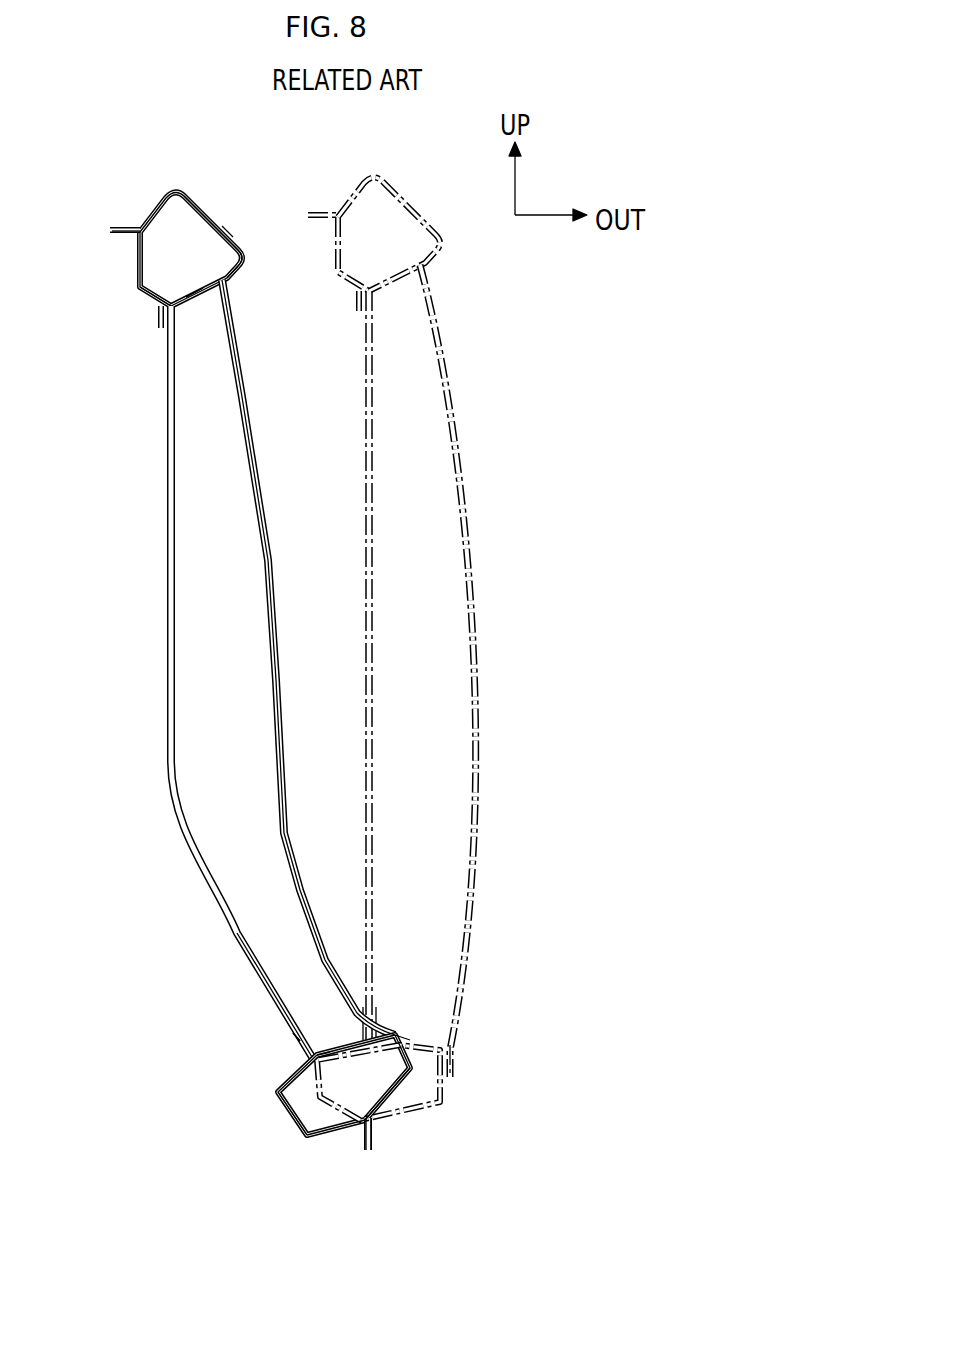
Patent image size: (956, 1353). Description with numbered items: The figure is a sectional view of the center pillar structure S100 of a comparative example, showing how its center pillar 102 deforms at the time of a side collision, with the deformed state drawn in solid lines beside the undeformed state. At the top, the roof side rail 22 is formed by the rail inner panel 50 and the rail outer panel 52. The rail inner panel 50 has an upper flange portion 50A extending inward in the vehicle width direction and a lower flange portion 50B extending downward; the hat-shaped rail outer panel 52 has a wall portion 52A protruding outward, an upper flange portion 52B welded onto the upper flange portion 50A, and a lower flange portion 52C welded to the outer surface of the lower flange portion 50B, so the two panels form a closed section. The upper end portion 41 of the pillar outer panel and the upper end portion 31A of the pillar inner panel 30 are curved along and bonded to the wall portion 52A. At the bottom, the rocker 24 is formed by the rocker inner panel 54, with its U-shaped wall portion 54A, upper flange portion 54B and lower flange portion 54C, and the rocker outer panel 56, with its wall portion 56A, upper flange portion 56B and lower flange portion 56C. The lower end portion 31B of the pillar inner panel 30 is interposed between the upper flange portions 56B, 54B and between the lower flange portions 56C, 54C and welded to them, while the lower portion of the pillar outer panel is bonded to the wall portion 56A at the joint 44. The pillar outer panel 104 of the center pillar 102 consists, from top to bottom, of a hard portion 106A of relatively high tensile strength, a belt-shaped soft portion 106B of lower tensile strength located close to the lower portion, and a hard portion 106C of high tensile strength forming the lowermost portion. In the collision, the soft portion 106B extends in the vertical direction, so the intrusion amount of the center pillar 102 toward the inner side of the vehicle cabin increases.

The roof side rail 22 is at (198, 194).
The rocker 24 is at (282, 1114).
The pillar inner panel 30 is at (165, 656).
The upper end portion 31A is at (188, 305).
The lower end portion 31B is at (281, 1017).
The upper end portion 41 is at (241, 258).
The joint 44 is at (403, 1035).
The roof side rail inner panel 50 is at (137, 275).
The upper flange portion 50A is at (120, 237).
The lower flange portion 50B is at (156, 314).
The roof side rail outer panel 52 is at (219, 218).
The wall portion 52A is at (207, 209).
The upper flange portion 52B is at (128, 226).
The lower flange portion 52C is at (162, 330).
The rocker inner panel 54 is at (276, 1092).
The wall portion 54A is at (293, 1129).
The upper flange portion 54B is at (296, 1048).
The lower flange portion 54C is at (358, 1138).
The rocker outer panel 56 is at (413, 1076).
The wall portion 56A is at (392, 1099).
The upper flange portion 56B is at (312, 1047).
The lower flange portion 56C is at (379, 1138).
The center pillar 102 is at (361, 594).
The pillar outer panel 104 is at (273, 553).
The hard portion 106A is at (252, 412).
The soft portion 106B is at (302, 902).
The hard portion 106C is at (327, 958).
The center pillar structure S100 is at (322, 832).